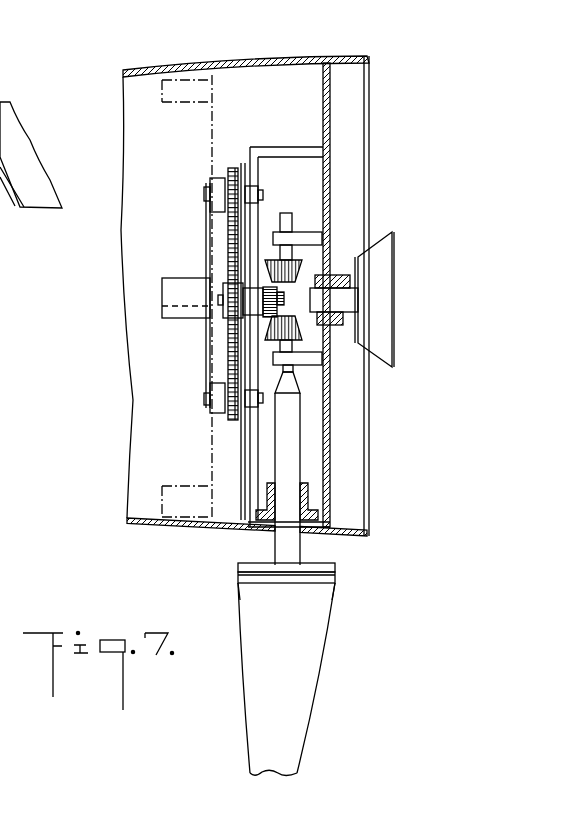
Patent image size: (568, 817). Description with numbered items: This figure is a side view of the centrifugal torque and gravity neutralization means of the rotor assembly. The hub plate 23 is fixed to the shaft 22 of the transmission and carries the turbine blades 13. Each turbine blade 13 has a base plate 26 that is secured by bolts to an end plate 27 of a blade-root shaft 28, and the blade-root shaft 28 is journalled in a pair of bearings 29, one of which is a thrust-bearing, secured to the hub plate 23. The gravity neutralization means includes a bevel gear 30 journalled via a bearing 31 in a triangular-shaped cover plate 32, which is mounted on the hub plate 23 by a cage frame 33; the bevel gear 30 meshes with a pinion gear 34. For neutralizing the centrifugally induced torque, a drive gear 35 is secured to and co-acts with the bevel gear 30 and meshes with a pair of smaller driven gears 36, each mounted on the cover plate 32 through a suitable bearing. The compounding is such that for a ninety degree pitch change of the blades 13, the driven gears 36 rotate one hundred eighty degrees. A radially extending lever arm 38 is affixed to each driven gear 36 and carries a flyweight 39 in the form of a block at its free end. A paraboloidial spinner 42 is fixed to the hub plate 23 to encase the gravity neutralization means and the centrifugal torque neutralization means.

The turbine blade 13 is at (309, 675).
The shaft 22 is at (345, 276).
The hub plate 23 is at (352, 503).
The base plate 26 is at (238, 570).
The end plate 27 is at (237, 582).
The blade-root shaft 28 is at (0, 220).
The bearings 29 is at (304, 366).
The bevel gear 30 is at (291, 300).
The bearing 31 is at (250, 312).
The cover plate 32 is at (246, 478).
The cage frame 33 is at (282, 147).
The pinion gear 34 is at (292, 258).
The drive gear 35 is at (252, 211).
The driven gears 36 is at (233, 168).
The lever arm 38 is at (207, 226).
The flyweight 39 is at (162, 309).
The paraboloidial spinner 42 is at (247, 68).